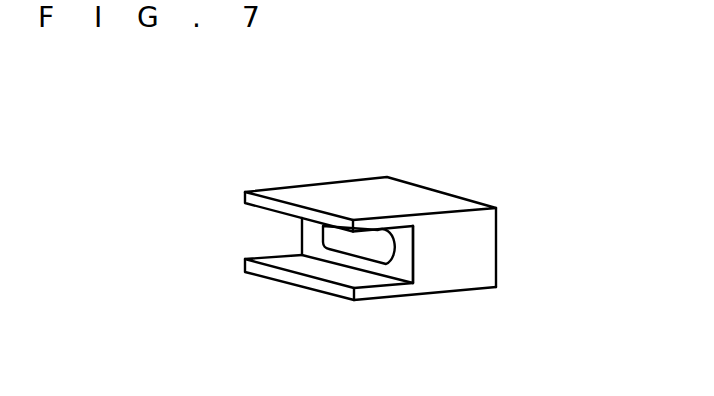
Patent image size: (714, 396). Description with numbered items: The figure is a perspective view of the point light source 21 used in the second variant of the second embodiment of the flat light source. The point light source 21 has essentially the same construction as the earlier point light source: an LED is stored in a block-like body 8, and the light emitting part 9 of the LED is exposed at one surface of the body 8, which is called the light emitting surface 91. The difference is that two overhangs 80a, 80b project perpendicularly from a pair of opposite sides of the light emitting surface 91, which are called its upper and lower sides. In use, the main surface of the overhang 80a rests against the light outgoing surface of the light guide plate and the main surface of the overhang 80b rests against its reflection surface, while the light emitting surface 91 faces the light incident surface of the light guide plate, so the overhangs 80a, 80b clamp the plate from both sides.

The point light source 21 is at (533, 157).
The body 8 is at (470, 259).
The overhang 80a is at (360, 197).
The overhang 80b is at (313, 283).
The light emitting part 9 is at (340, 239).
The light emitting surface 91 is at (407, 268).